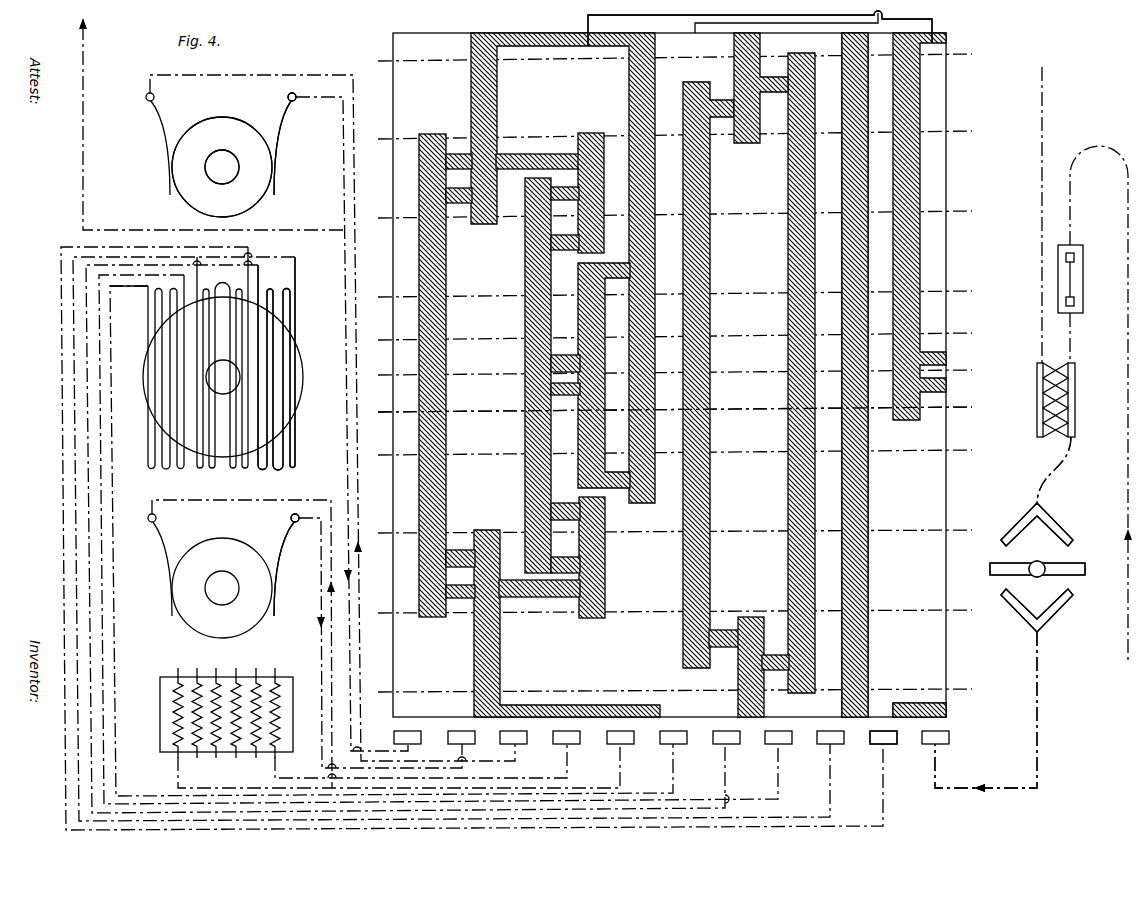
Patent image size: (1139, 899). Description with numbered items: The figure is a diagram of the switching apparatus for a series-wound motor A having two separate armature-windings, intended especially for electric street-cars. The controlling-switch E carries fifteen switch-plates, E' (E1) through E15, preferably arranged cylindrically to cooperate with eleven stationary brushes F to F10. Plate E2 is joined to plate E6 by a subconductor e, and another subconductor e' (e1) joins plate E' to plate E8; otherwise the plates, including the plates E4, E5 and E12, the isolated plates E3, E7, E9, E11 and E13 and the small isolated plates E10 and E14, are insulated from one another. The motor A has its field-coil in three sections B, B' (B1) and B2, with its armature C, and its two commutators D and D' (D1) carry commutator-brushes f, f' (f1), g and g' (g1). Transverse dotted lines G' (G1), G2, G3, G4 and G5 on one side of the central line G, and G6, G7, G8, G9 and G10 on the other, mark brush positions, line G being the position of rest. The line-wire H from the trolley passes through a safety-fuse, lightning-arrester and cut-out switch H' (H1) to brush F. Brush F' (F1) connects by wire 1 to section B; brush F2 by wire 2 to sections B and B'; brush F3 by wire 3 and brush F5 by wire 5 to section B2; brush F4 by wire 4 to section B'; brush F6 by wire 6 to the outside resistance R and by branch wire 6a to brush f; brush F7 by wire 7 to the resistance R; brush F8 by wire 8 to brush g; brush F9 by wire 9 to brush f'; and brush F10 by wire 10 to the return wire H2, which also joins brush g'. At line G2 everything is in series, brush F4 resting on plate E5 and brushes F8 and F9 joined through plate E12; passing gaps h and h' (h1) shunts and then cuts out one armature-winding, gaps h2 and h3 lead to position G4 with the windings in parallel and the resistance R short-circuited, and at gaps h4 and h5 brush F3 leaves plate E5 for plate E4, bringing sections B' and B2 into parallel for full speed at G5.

The motor A is at (150, 372).
The central field-coil section B is at (222, 357).
The field-coil section B' is at (276, 363).
The field-coil section B2 is at (129, 299).
The armature C is at (300, 370).
The commutator D is at (222, 588).
The commutator D' is at (222, 167).
The outside resistance R is at (226, 721).
The commutator-brush f is at (160, 565).
The commutator-brush f' is at (286, 565).
The commutator-brush g is at (158, 144).
The commutator-brush g' is at (285, 144).
The line-wire H is at (1083, 363).
The cut-out switch H' is at (1010, 614).
The exit or return line wire H2 is at (209, 124).
The controlling-switch E is at (669, 364).
The switch-plate E' is at (894, 375).
The switch-plate E2 is at (919, 226).
The isolated switch-plate E3 is at (940, 372).
The switch-plate E4 is at (783, 375).
The switch-plate E5 is at (712, 375).
The switch-plate E6 is at (612, 557).
The isolated switch-plate E7 is at (604, 375).
The switch-plate E8 is at (563, 268).
The switch-plate E9 is at (565, 375).
The small isolated plate E10 is at (564, 353).
The isolated switch-plate E11 is at (565, 538).
The switch-plate E12 is at (451, 375).
The isolated switch-plate E13 is at (460, 574).
The small isolated plate E14 is at (512, 178).
The switch-plate E15 is at (537, 623).
The subconductor e is at (802, 17).
The subconductor e' is at (760, 28).
The brush F is at (928, 734).
The brush F' is at (876, 734).
The brush F2 is at (823, 734).
The brush F3 is at (771, 734).
The brush F4 is at (719, 734).
The brush F5 is at (666, 734).
The brush F6 is at (613, 734).
The brush F7 is at (559, 734).
The brush F8 is at (506, 734).
The brush F9 is at (454, 734).
The brush F10 is at (399, 734).
The central dotted line G is at (682, 370).
The transverse dotted line G' is at (684, 406).
The transverse dotted line G2 is at (685, 448).
The transverse dotted line G3 is at (685, 528).
The transverse dotted line G4 is at (685, 608).
The transverse dotted line G5 is at (685, 687).
The transverse dotted line G6 is at (685, 331).
The transverse dotted line G7 is at (685, 289).
The transverse dotted line G8 is at (685, 209).
The transverse dotted line G9 is at (685, 130).
The transverse dotted line G10 is at (688, 52).
The gap h is at (565, 571).
The gap h' is at (458, 533).
The gap h2 is at (523, 590).
The gap h3 is at (453, 598).
The gap h4 is at (718, 648).
The gap h5 is at (775, 655).
The wire 1 is at (463, 536).
The wire 2 is at (445, 539).
The wire 3 is at (432, 542).
The wire 4 is at (406, 541).
The wire 5 is at (391, 544).
The wire 6 is at (399, 767).
The branch wire 6a is at (243, 635).
The wire 7 is at (421, 763).
The wire 8 is at (332, 410).
The wire 9 is at (386, 650).
The wire 10 is at (352, 427).
The switch-plate E1 is at (894, 375).
The brush F1 is at (876, 734).
The transverse dotted line G1 is at (684, 406).
The gap h1 is at (458, 533).
The subconductor e1 is at (760, 28).
The commutator D1 is at (222, 167).
The commutator-brush g1 is at (285, 144).
The commutator-brush f1 is at (286, 565).
The field-coil section B1 is at (276, 363).
The cut-out switch H1 is at (1010, 614).